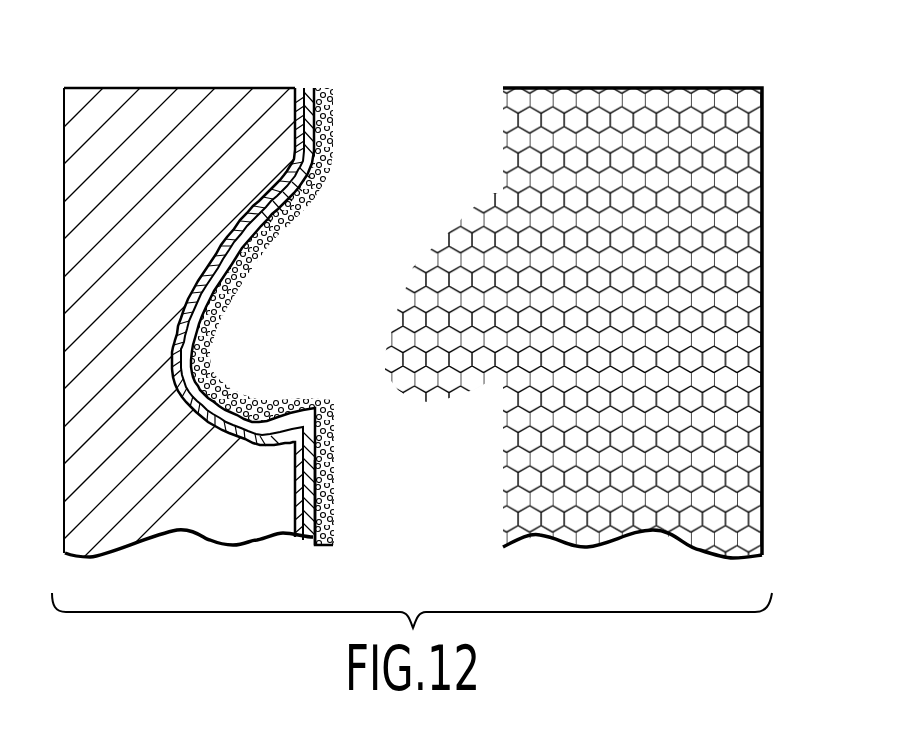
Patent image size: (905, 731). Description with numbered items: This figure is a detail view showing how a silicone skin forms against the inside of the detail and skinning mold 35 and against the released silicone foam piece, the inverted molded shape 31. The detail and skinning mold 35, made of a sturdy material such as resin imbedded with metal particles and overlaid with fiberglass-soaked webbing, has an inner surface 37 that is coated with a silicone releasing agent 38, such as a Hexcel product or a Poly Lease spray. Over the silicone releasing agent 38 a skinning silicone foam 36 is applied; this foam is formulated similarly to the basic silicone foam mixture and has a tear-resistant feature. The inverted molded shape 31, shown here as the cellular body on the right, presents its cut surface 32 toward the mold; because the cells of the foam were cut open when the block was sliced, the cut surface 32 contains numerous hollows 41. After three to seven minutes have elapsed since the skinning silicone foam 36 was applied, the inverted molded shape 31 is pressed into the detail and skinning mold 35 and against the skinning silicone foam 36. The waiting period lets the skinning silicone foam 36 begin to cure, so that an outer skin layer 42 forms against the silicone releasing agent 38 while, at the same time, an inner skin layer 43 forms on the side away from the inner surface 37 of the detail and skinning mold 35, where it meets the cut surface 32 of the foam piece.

The inverted molded shape 31 is at (677, 98).
The cut surface 32 is at (508, 145).
The detail and skinning mold 35 is at (118, 103).
The skinning silicone foam 36 is at (310, 536).
The inner surface 37 is at (293, 488).
The silicone releasing agent 38 is at (297, 88).
The hollows 41 is at (512, 517).
The outer skin layer 42 is at (305, 90).
The inner skin layer 43 is at (318, 122).